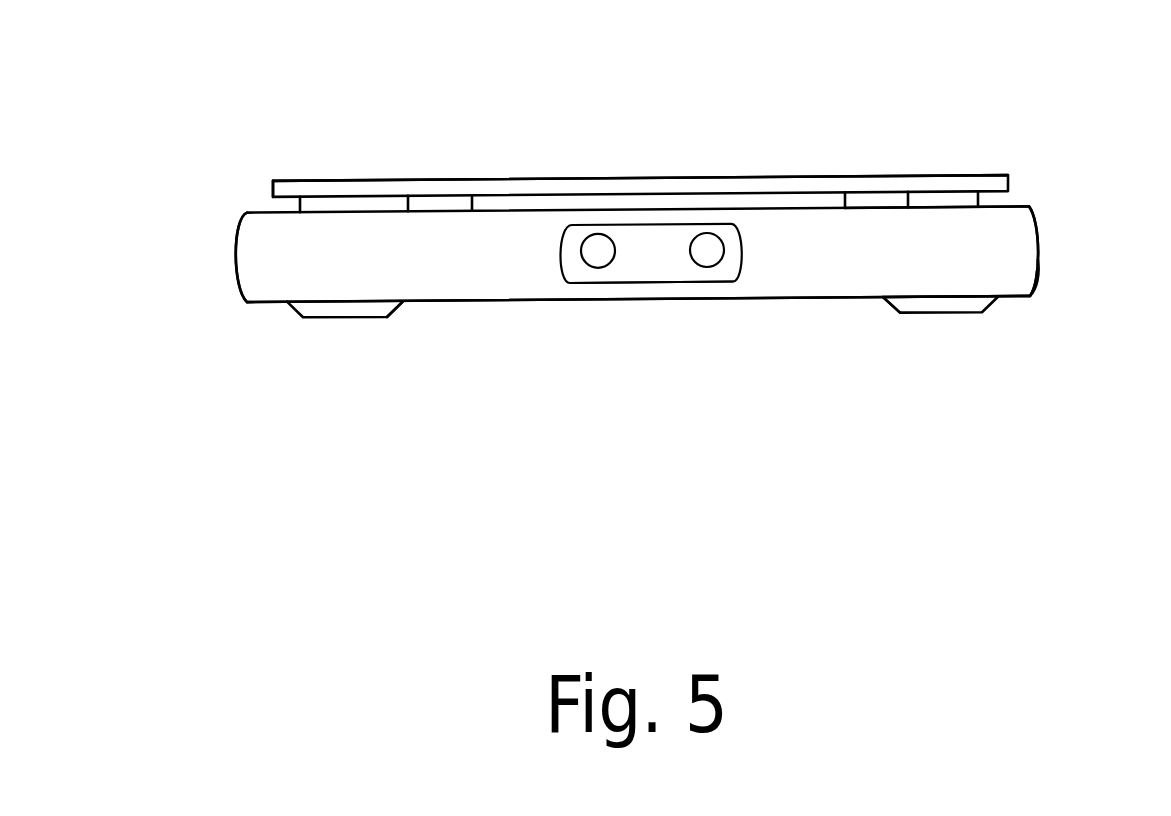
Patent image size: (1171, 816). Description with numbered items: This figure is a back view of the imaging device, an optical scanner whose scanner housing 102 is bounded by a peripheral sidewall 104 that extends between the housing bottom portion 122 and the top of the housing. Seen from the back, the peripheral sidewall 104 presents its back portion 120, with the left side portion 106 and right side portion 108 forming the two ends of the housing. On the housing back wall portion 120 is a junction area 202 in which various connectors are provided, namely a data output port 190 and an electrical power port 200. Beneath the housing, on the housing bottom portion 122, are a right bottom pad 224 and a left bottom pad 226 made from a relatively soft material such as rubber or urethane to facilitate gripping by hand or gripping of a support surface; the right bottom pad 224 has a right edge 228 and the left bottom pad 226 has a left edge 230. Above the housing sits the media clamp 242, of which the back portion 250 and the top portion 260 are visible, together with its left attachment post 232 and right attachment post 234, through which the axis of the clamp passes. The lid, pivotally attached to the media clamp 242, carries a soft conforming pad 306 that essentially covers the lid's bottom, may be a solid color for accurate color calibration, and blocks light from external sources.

The scanner housing 102 is at (226, 220).
The soft conforming pad 306 is at (952, 197).
The top portion 260 is at (365, 178).
The media clamp 242 is at (412, 175).
The right attachment post 234 is at (438, 203).
The back portion 250 is at (588, 184).
The left attachment post 232 is at (887, 200).
The left side portion 106 is at (1041, 256).
The peripheral sidewall 104 is at (993, 255).
The back portion 120 is at (915, 254).
The right side portion 108 is at (236, 258).
The right bottom pad 224 is at (343, 314).
The right edge 228 is at (400, 307).
The housing bottom portion 122 is at (473, 301).
The data output port 190 is at (593, 258).
The junction area 202 is at (650, 268).
The electrical power port 200 is at (705, 258).
The left bottom pad 226 is at (937, 305).
The left edge 230 is at (885, 300).